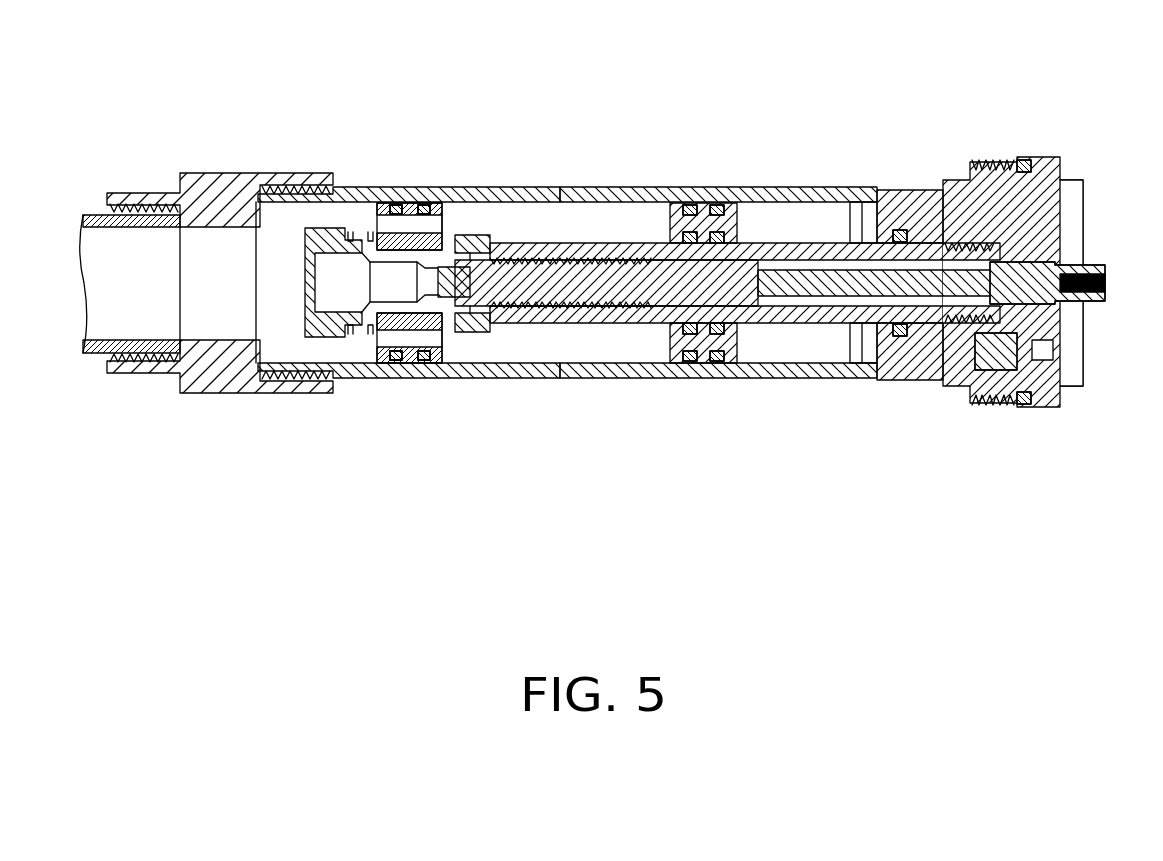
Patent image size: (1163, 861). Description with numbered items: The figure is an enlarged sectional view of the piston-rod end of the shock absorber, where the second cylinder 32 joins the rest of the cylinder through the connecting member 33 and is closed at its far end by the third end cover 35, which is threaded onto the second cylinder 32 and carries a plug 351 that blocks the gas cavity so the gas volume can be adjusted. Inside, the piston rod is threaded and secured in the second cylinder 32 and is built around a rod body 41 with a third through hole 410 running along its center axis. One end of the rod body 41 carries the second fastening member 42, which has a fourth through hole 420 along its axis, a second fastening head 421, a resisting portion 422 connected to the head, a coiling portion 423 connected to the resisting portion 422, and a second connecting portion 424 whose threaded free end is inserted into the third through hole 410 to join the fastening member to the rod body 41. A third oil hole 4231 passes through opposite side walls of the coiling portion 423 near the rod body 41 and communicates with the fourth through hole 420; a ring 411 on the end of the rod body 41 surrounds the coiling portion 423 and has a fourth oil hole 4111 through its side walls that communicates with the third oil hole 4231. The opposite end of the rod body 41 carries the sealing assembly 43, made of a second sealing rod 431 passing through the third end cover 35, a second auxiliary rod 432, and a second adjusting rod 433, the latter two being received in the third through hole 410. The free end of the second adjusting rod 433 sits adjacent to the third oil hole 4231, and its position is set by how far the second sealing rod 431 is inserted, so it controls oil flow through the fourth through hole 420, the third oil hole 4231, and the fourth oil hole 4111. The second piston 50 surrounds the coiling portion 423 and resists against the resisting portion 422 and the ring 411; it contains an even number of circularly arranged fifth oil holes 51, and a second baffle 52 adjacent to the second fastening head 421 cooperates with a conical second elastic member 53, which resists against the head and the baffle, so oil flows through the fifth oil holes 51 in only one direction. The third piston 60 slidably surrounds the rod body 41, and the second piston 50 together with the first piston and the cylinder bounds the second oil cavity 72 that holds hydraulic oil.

The second cylinder 32 is at (737, 190).
The connecting member 33 is at (205, 195).
The third end cover 35 is at (1033, 213).
The plug 351 is at (993, 402).
The rod body 41 is at (650, 318).
The third through hole 410 is at (830, 300).
The ring 411 is at (490, 250).
The fourth oil hole 4111 is at (470, 237).
The second fastening member 42 is at (423, 372).
The fourth through hole 420 is at (327, 283).
The second fastening head 421 is at (327, 337).
The resisting portion 422 is at (352, 340).
The coiling portion 423 is at (447, 310).
The third oil hole 4231 is at (460, 262).
The second connecting portion 424 is at (571, 380).
The sealing assembly 43 is at (780, 164).
The second sealing rod 431 is at (1005, 252).
The second auxiliary rod 432 is at (832, 268).
The second adjusting rod 433 is at (747, 273).
The second piston 50 is at (415, 205).
The fifth oil holes 51 is at (442, 223).
The second baffle 52 is at (372, 220).
The second elastic member 53 is at (350, 232).
The third piston 60 is at (737, 340).
The second oil cavity 72 is at (282, 228).